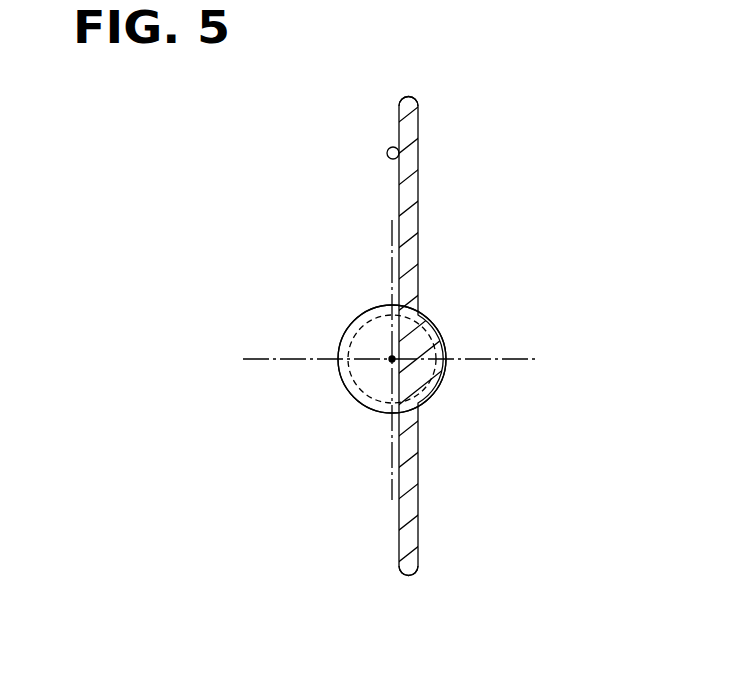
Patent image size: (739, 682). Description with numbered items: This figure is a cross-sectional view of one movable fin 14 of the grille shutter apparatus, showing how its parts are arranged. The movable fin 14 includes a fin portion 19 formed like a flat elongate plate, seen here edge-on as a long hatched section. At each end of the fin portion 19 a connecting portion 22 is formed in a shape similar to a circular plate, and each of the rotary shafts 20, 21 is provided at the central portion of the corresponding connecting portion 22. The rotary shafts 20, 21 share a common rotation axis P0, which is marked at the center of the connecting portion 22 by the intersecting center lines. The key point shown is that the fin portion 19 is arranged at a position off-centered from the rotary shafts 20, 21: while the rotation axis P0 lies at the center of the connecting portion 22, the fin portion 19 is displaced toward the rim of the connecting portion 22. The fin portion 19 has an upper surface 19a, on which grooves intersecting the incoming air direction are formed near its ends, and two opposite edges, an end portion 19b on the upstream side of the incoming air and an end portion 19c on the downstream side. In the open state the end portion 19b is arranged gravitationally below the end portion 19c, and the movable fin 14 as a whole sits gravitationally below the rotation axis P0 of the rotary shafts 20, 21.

The movable fin 14 is at (389, 337).
The fin portion 19 is at (419, 185).
The upper surface 19a is at (402, 150).
The end portion 19b is at (410, 577).
The end portion 19c is at (408, 96).
The rotary shaft 20 is at (344, 365).
The rotary shaft 21 is at (338, 338).
The connecting portion 22 is at (344, 365).
The rotation axis P0 is at (392, 359).